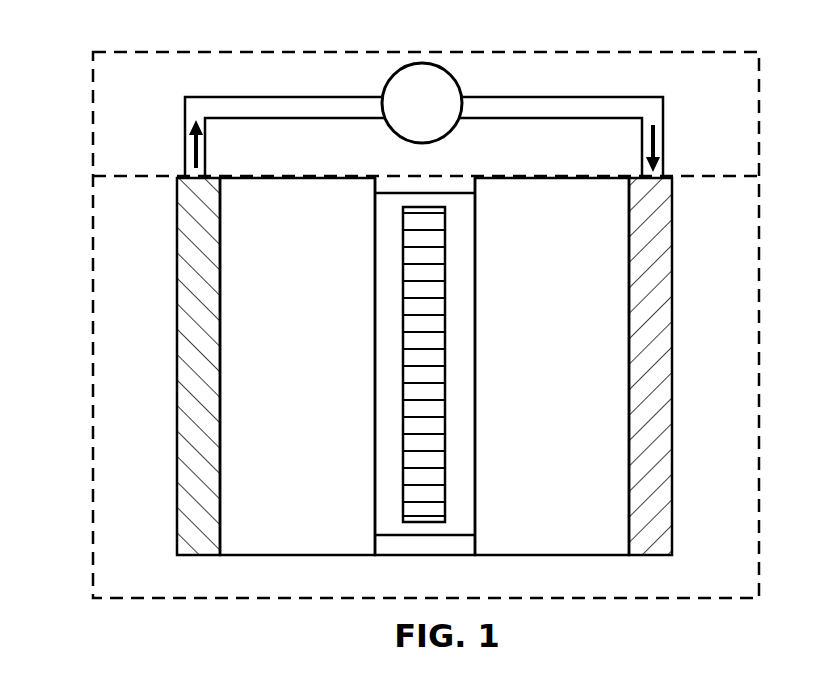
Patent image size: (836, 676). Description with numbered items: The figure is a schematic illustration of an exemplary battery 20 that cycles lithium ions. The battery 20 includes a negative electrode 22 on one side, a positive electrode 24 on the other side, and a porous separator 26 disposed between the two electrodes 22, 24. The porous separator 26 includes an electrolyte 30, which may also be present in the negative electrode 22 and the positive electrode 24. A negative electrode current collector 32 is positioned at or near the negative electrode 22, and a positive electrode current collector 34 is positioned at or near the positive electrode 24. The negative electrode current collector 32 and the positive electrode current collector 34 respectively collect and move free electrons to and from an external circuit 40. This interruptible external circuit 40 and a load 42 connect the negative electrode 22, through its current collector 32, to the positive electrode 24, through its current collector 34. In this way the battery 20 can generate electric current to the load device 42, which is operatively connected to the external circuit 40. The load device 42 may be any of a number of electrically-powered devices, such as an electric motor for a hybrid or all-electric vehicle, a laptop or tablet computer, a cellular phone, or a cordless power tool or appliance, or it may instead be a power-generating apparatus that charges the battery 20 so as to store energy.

The battery 20 is at (72, 274).
The negative electrode 22 is at (297, 366).
The positive electrode 24 is at (552, 366).
The porous separator 26 is at (430, 536).
The electrolyte 30 is at (427, 357).
The negative electrode current collector 32 is at (177, 262).
The positive electrode current collector 34 is at (674, 254).
The external circuit 40 is at (148, 48).
The load device 42 is at (424, 119).